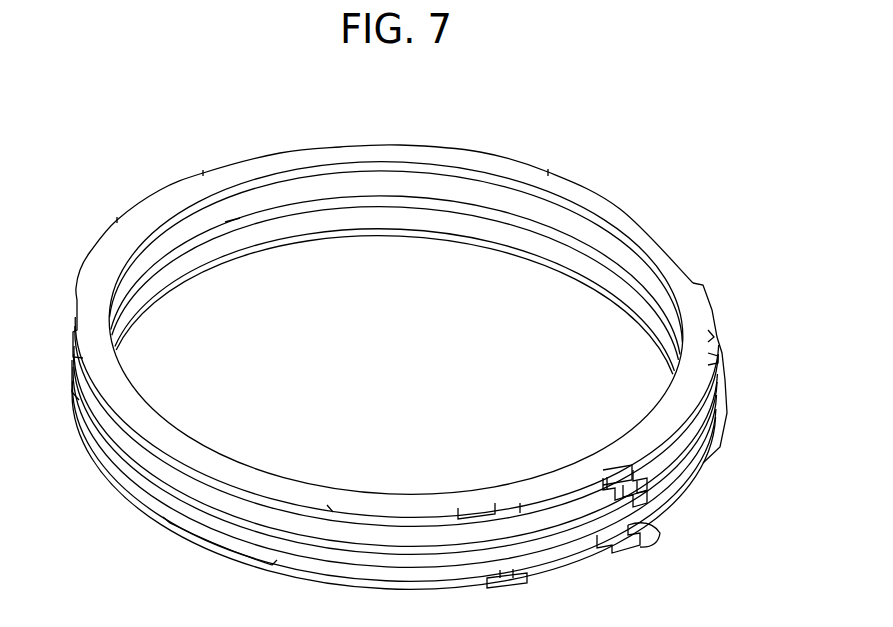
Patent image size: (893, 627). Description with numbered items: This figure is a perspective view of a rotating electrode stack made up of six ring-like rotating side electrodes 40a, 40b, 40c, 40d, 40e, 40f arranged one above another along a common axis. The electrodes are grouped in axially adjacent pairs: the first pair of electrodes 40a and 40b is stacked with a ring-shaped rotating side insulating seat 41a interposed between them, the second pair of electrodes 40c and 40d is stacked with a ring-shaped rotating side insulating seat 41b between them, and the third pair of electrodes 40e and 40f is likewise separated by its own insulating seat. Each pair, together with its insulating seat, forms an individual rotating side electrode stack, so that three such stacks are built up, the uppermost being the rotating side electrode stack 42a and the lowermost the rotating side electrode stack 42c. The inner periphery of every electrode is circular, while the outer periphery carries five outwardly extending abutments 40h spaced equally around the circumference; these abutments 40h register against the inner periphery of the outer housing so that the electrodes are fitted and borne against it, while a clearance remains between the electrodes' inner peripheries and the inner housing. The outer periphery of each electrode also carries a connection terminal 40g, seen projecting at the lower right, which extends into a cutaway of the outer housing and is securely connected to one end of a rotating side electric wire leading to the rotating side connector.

The rotating side electrode 40a is at (325, 157).
The rotating side electrode 40b is at (352, 233).
The rotating side electrode 40c is at (392, 320).
The rotating side electrode 40d is at (397, 294).
The rotating side electrode 40e is at (390, 337).
The rotating side electrode 40f is at (397, 299).
The connection terminal 40g is at (647, 512).
The abutment 40h is at (721, 447).
The rotating side insulating seat 41a is at (228, 225).
The rotating side insulating seat 41b is at (290, 360).
The rotating side electrode stack 42a is at (132, 90).
The rotating side electrode stack 42c is at (203, 90).